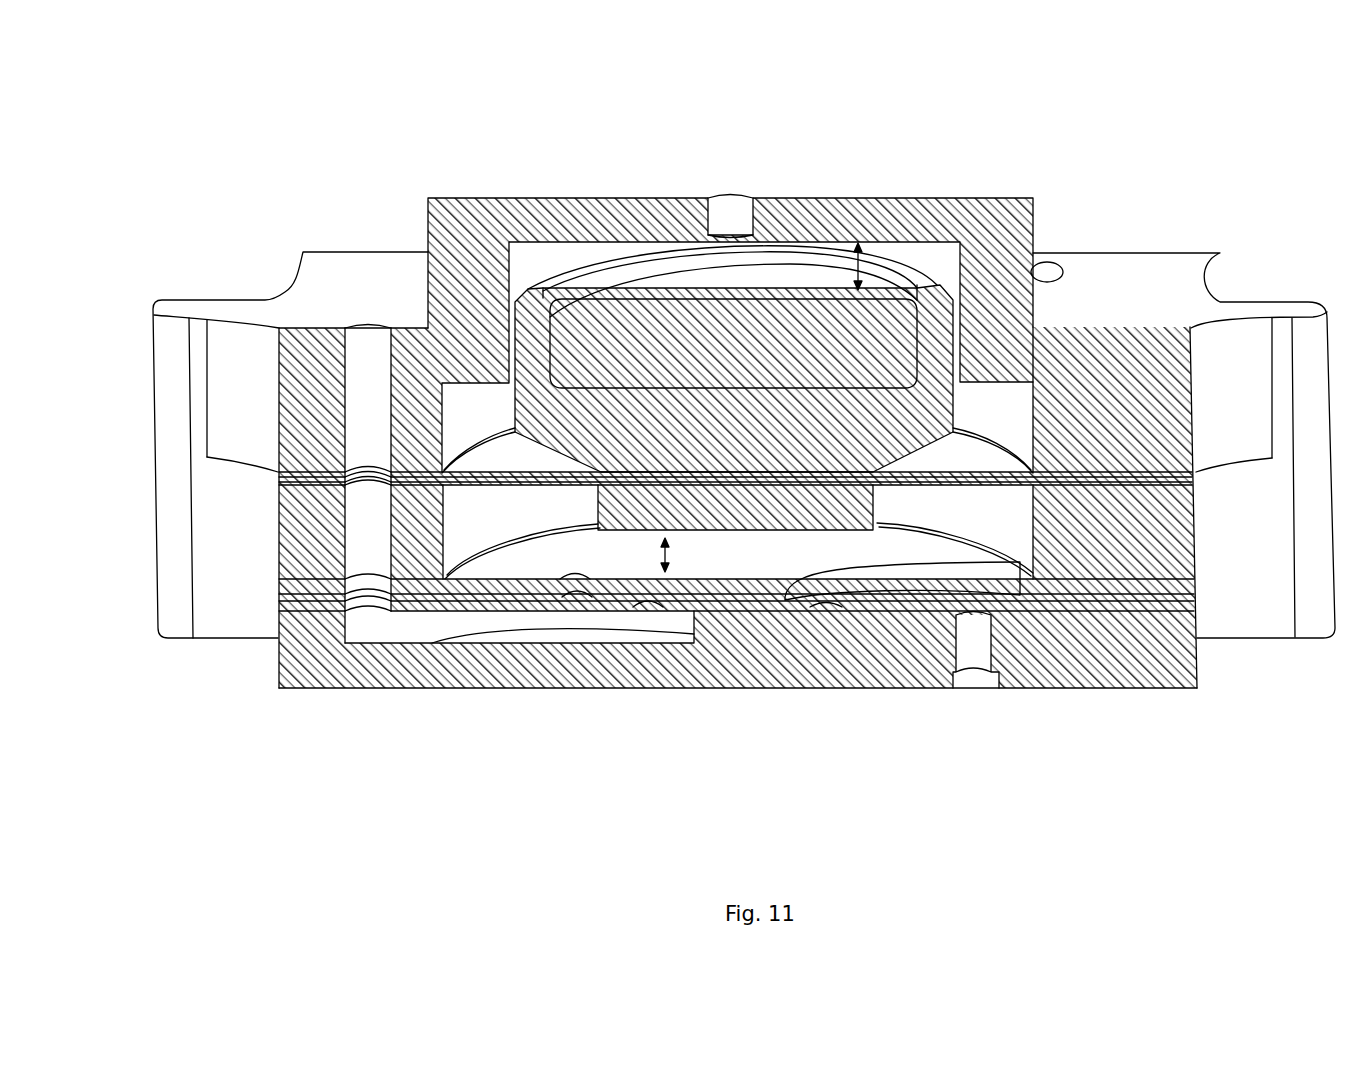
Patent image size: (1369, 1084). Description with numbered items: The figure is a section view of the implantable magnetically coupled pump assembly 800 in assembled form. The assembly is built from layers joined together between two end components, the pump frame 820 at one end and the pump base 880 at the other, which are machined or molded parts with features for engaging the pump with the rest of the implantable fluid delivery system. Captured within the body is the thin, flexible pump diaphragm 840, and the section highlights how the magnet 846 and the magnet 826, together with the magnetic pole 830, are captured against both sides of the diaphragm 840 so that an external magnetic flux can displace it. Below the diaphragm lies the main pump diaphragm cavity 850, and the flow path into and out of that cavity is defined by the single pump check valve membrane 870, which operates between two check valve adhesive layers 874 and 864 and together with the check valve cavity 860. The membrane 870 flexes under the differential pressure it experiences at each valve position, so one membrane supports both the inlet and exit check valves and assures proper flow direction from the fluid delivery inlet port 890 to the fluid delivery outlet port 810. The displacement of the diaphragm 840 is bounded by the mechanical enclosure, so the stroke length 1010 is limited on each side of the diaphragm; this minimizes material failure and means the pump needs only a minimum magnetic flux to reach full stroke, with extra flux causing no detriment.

The magnetically coupled pump assembly 800 is at (232, 123).
The fluid delivery outlet port 810 is at (365, 330).
The pump frame 820 is at (453, 230).
The magnet 826 is at (622, 316).
The magnetic pole 830 is at (530, 313).
The pump diaphragm 840 is at (1032, 289).
The magnet 846 is at (753, 520).
The main pump diaphragm cavity 850 is at (556, 516).
The check valve cavity 860 is at (918, 570).
The check valve adhesive layer 864 is at (345, 615).
The pump check valve membrane 870 is at (877, 607).
The check valve adhesive layer 874 is at (438, 613).
The pump base 880 is at (622, 680).
The fluid delivery inlet port 890 is at (976, 675).
The stroke length 1010 is at (888, 268).